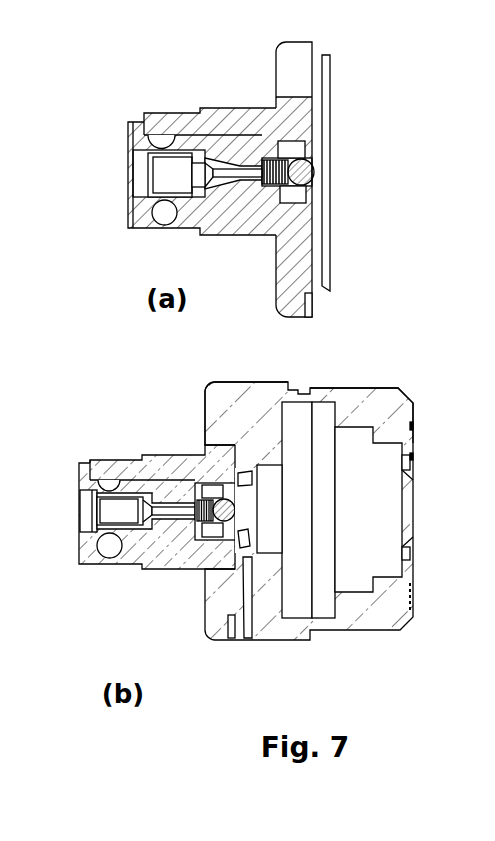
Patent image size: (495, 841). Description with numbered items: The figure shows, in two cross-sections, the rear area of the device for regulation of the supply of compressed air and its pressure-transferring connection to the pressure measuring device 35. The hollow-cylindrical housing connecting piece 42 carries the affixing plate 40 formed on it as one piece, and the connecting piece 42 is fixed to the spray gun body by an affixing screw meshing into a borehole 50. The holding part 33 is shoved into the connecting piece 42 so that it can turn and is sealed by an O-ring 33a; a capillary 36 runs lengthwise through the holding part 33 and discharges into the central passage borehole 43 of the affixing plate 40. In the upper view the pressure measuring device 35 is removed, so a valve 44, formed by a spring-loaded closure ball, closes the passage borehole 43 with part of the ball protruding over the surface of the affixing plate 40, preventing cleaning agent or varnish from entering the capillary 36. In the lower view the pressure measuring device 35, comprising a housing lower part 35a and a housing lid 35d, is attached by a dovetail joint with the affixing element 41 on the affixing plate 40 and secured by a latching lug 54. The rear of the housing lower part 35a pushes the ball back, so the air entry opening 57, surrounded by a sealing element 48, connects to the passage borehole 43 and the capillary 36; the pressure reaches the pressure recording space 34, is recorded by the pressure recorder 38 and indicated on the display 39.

The holding part 33 is at (186, 148).
The O-ring 33a is at (290, 203).
The capillary 36 is at (170, 172).
The housing connecting piece 42 is at (240, 108).
The valve 44 is at (305, 153).
The passage borehole 43 is at (313, 182).
The affixing element 41 is at (330, 193).
The affixing plate 40 is at (293, 280).
The borehole 50 is at (165, 213).
The pressure measuring device 35 is at (348, 611).
The housing lower part 35a is at (238, 410).
The housing lid 35d is at (377, 410).
The pressure recording space 34 is at (267, 505).
The digital display 39 is at (412, 502).
The pressure recorder 38 is at (328, 573).
The air entry opening 57 is at (250, 502).
The latching lug 54 is at (232, 616).
The sealing element 48 is at (245, 545).